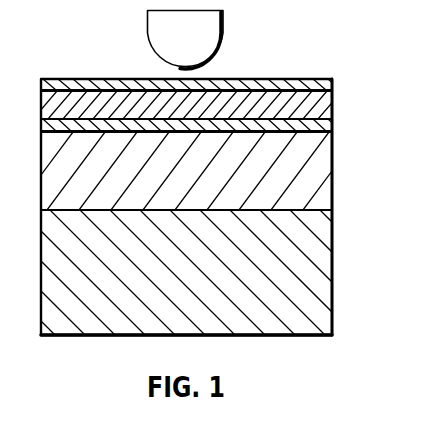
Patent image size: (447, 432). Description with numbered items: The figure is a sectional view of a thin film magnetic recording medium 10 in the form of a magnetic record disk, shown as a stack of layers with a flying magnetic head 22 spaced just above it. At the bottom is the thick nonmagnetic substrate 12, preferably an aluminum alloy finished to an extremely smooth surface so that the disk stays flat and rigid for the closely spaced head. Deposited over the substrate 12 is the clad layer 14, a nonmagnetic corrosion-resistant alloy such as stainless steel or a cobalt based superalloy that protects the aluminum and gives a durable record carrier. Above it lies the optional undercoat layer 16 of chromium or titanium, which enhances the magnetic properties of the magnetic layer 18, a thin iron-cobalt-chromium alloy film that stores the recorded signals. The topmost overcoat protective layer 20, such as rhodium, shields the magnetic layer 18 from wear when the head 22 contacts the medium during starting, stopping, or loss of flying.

The thin film magnetic recording medium 10 is at (336, 152).
The nonmagnetic substrate 12 is at (319, 258).
The clad layer 14 is at (326, 184).
The undercoat layer 16 is at (326, 125).
The magnetic layer 18 is at (324, 104).
The overcoat protective layer 20 is at (325, 86).
The flying magnetic head 22 is at (226, 33).